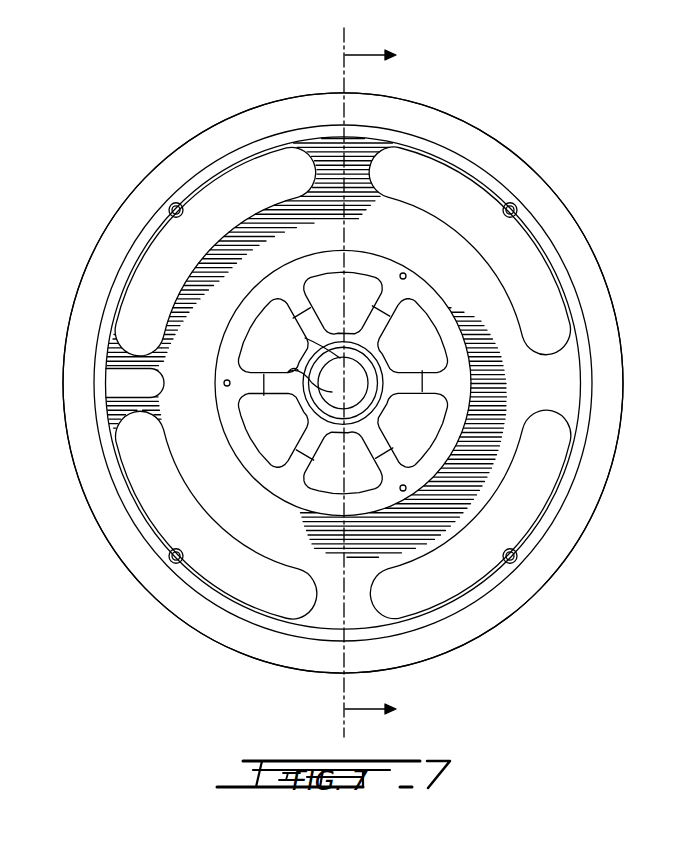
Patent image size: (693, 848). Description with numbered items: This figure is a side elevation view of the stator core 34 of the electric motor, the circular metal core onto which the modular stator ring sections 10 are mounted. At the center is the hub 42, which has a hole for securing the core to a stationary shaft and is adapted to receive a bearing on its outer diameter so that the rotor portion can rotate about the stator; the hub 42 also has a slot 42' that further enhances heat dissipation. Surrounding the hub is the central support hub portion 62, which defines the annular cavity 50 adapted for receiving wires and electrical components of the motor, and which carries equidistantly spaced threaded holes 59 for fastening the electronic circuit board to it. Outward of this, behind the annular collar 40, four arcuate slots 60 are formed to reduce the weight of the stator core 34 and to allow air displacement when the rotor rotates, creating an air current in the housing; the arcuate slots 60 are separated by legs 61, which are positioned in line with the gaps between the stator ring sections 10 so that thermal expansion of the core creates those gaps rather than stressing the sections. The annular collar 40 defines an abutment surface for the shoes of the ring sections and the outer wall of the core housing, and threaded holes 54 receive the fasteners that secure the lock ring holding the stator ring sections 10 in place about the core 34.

The modular stator ring section 10 is at (348, 388).
The stator core 34 is at (497, 112).
The annular collar 40 is at (249, 148).
The hub 42 is at (377, 382).
The slot 42' is at (268, 413).
The annular cavity 50 is at (378, 546).
The threaded holes 54 is at (175, 204).
The threaded holes 59 is at (406, 274).
The arcuate slots 60 is at (168, 309).
The legs 61 is at (362, 156).
The central support hub portion 62 is at (232, 310).